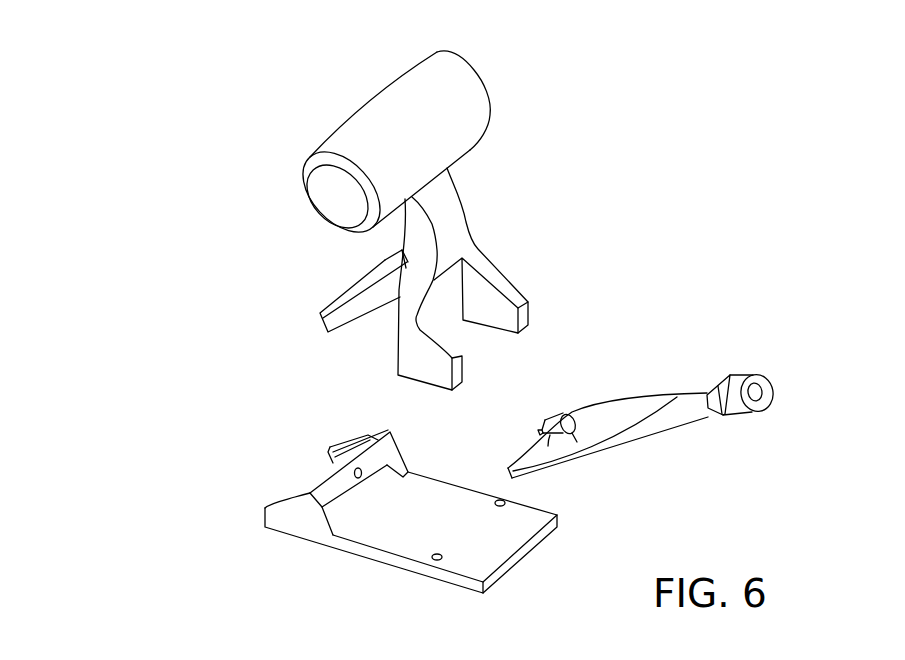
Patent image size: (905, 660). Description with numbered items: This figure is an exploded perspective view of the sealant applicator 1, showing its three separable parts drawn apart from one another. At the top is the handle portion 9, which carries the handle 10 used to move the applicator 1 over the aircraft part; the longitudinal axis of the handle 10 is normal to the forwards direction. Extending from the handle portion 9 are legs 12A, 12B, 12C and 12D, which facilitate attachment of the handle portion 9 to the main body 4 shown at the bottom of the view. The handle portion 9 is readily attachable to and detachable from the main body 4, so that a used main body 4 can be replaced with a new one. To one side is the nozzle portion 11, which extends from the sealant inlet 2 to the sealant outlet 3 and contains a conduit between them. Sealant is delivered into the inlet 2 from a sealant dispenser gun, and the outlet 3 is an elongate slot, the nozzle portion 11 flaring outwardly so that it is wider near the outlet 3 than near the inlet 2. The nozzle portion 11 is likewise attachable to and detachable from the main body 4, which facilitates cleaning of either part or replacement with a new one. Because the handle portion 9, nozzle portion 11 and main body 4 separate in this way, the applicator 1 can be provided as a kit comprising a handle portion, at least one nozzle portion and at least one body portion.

The sealant applicator 1 is at (187, 162).
The handle 10 is at (400, 115).
The handle portion 9 is at (450, 220).
The leg 12A is at (500, 302).
The leg 12B is at (400, 353).
The leg 12C is at (387, 266).
The leg 12D is at (345, 300).
The nozzle portion 11 is at (643, 388).
The sealant inlet 2 is at (760, 392).
The sealant outlet 3 is at (537, 441).
The main body 4 is at (417, 532).